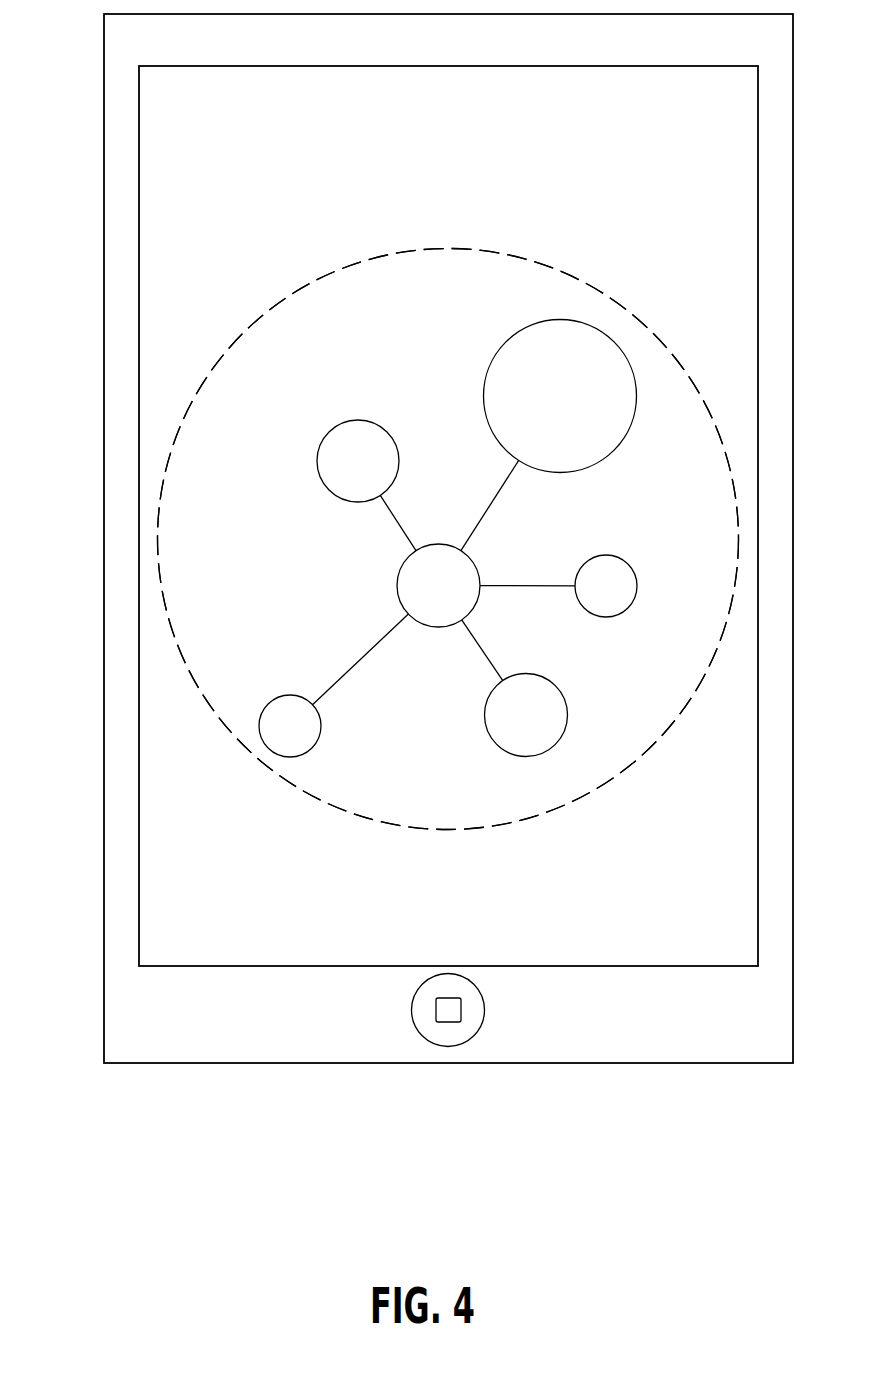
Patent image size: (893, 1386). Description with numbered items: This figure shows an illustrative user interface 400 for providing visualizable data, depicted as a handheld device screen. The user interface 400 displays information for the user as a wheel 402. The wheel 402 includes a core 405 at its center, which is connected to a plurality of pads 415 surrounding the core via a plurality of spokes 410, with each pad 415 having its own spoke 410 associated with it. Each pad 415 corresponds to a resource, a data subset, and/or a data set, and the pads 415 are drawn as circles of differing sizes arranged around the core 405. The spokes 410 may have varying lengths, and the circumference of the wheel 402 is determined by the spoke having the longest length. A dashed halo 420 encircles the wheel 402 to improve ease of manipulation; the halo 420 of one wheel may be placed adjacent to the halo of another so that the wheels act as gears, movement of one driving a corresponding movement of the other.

The user interface 400 is at (114, 659).
The wheel 402 is at (612, 275).
The core 405 is at (455, 597).
The spokes 410 is at (486, 512).
The pads 415 is at (576, 408).
The halo 420 is at (422, 247).